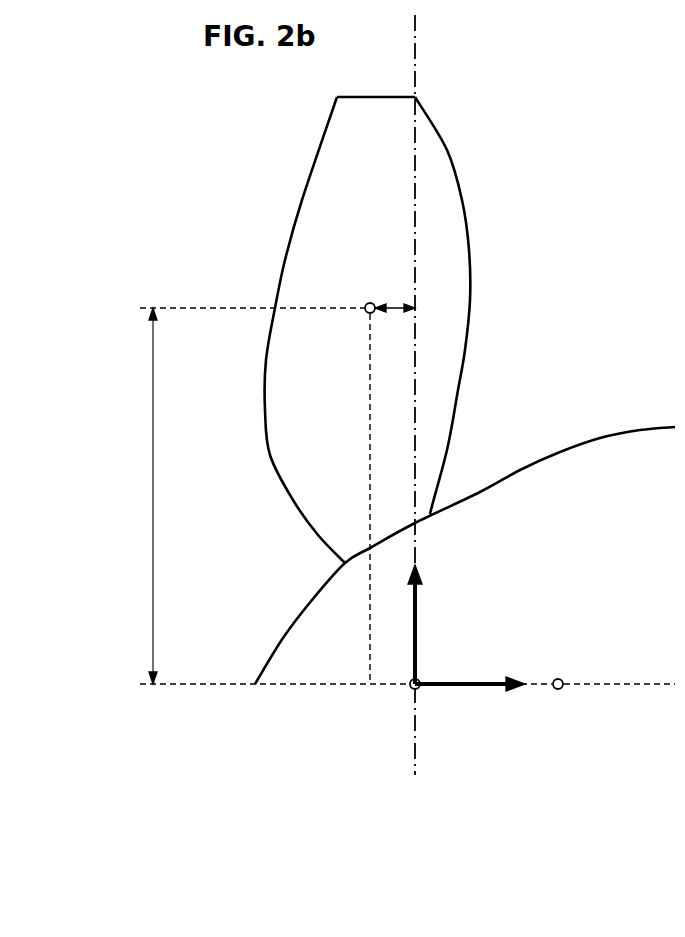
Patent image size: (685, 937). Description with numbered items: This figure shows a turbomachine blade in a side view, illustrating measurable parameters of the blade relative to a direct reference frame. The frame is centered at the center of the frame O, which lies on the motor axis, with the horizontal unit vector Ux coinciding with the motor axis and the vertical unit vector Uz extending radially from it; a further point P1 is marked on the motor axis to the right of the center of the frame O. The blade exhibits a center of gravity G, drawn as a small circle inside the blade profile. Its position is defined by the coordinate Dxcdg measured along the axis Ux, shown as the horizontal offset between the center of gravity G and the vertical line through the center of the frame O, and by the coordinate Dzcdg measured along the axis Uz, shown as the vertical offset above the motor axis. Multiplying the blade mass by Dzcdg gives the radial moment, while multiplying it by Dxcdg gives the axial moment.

The center of gravity G is at (366, 313).
The center of the frame O is at (410, 689).
The reference point on hub P1 is at (557, 689).
The coordinate of the center of gravity on axis UX Dxcdg is at (401, 306).
The coordinate of the center of gravity on axis UZ Dzcdg is at (122, 496).
The motor axis Ux is at (470, 669).
The axis UZ Uz is at (428, 624).